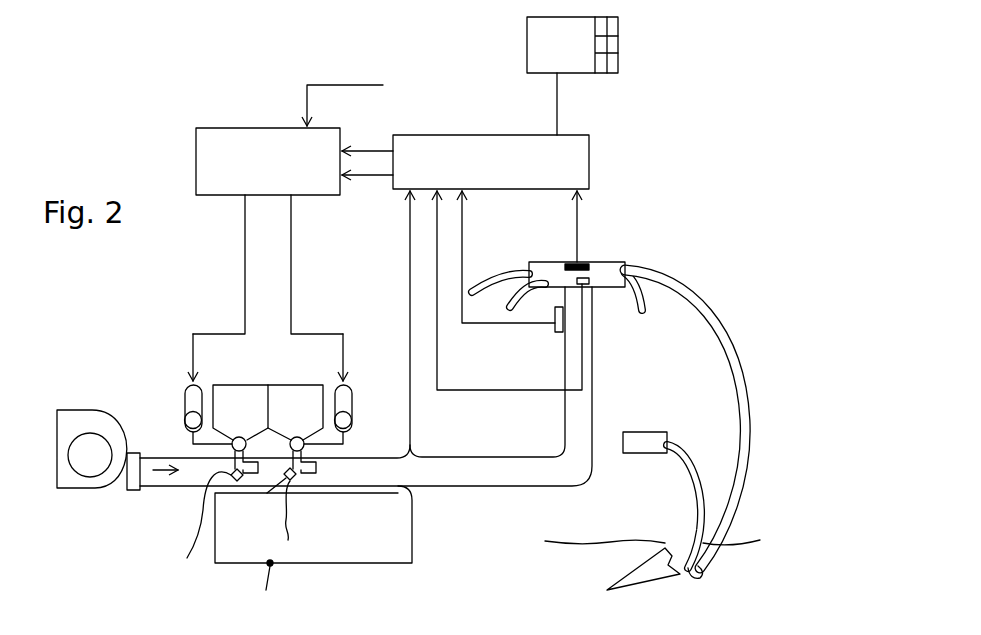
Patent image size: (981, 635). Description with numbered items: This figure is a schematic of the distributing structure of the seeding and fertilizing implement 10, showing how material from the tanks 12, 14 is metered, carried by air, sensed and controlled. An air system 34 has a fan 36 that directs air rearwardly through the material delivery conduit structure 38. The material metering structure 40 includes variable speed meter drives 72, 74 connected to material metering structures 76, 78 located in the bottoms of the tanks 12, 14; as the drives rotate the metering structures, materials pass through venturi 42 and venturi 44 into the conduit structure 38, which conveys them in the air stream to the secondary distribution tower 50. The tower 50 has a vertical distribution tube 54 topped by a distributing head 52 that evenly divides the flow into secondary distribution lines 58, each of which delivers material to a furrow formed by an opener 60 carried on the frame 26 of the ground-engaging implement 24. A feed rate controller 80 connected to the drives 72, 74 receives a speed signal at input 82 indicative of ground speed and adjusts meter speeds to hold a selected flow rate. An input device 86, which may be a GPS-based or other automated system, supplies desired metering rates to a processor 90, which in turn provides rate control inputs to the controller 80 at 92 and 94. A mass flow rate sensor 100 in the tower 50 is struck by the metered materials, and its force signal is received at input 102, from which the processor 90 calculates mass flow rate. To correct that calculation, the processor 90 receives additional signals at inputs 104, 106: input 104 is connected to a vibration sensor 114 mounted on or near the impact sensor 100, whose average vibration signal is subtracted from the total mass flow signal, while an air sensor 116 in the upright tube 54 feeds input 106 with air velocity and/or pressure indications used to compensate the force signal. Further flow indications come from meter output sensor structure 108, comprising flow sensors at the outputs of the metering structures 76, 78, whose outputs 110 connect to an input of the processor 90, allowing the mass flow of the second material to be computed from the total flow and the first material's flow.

The seeding and fertilizing implement 10 is at (126, 352).
The tank 12 is at (238, 395).
The tank 14 is at (296, 395).
The ground-engaging implement 24 is at (691, 272).
The frame 26 is at (643, 453).
The air system 34 is at (148, 503).
The fan 36 is at (112, 410).
The material delivery conduit structure 38 is at (466, 487).
The material metering structure 40 is at (352, 449).
The venturi structure 42 is at (252, 477).
The venturi structure 44 is at (305, 477).
The secondary distribution tower 50 is at (554, 405).
The distributing head 52 is at (622, 262).
The vertical distribution tube 54 is at (565, 422).
The secondary distribution lines 58 is at (508, 292).
The opener 60 is at (686, 488).
The variable speed meter drive 72 is at (183, 390).
The variable speed meter drive 74 is at (352, 392).
The material metering structure 76 is at (232, 452).
The material metering structure 78 is at (307, 448).
The feed rate controller 80 is at (223, 127).
The input 82 is at (322, 82).
The input device 86 is at (618, 42).
The processor 90 is at (589, 155).
The rate control input 92 is at (372, 148).
The rate control input 94 is at (377, 178).
The mass flow rate sensor 100 is at (575, 259).
The input 102 is at (576, 230).
The input 104 is at (470, 390).
The input 106 is at (483, 323).
The meter output sensor structure 108 is at (155, 466).
The outputs 110 is at (272, 589).
The vibration sensor 114 is at (607, 290).
The air sensor 116 is at (558, 332).